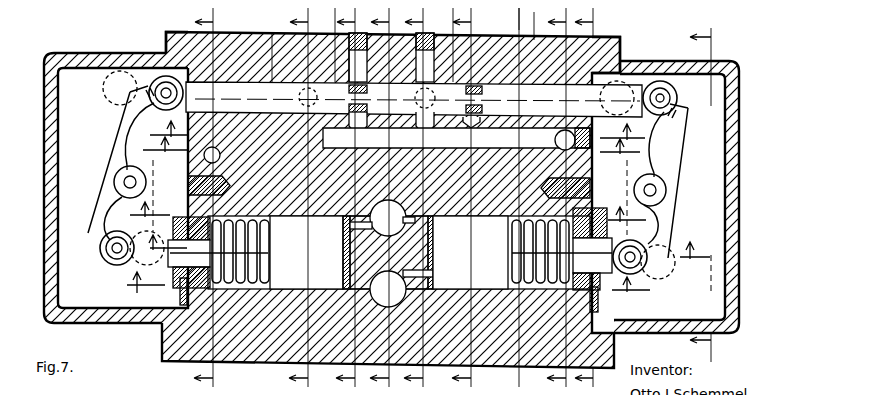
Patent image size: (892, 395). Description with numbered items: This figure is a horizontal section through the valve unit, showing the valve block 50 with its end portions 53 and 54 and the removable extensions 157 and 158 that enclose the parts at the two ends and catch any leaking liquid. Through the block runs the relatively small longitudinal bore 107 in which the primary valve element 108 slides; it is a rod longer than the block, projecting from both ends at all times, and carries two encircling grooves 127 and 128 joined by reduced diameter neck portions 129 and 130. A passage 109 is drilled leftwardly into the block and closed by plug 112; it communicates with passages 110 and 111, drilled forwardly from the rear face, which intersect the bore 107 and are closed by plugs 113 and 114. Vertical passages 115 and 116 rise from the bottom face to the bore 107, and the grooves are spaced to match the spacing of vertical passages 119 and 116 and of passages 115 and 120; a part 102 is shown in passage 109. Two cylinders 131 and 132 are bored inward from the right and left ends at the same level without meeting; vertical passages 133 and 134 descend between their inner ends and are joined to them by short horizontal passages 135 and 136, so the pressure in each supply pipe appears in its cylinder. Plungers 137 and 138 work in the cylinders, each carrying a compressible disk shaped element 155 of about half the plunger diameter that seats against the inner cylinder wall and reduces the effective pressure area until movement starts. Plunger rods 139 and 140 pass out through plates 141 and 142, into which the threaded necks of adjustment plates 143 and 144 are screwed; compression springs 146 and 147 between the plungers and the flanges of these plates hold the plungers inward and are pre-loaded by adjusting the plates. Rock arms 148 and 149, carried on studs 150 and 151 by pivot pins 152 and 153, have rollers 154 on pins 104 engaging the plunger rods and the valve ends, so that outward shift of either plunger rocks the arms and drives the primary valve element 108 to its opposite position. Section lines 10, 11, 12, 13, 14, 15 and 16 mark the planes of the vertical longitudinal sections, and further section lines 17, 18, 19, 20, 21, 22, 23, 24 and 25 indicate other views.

The section line 10— 10 is at (163, 87).
The section line 11— 11 is at (399, 128).
The section line 12— 12 is at (391, 145).
The section line 13— 13 is at (169, 177).
The section line 14— 14 is at (387, 219).
The section line 15— 15 is at (429, 247).
The section line 16— 16 is at (388, 292).
The section line 17 is at (711, 190).
The section line 18 is at (595, 197).
The section line 19 is at (567, 197).
The section line 20 is at (472, 197).
The section line 21 is at (424, 197).
The section line 22 is at (390, 197).
The section line 23 is at (356, 197).
The section line 24 is at (309, 197).
The section line 25 is at (215, 197).
The valve body 50 is at (391, 200).
The body flange 53 is at (612, 42).
The body flange 54 is at (168, 42).
The ball 102 is at (565, 150).
The pin 104 is at (220, 155).
The bore 107 is at (272, 33).
The primary valve element 108 is at (541, 26).
The passage 109 is at (519, 15).
The passage 110 is at (434, 66).
The passage 111 is at (349, 62).
The plug 112 is at (590, 138).
The plug 113 is at (459, 45).
The plug 114 is at (343, 45).
The vertical passage 115 is at (563, 181).
The vertical passage 116 is at (312, 105).
The vertical passage 119 is at (480, 125).
The vertical passage 120 is at (414, 99).
The encircling groove 127 is at (535, 72).
The encircling groove 128 is at (374, 85).
The reduced diameter neck portion 129 is at (482, 101).
The reduced diameter neck portion 130 is at (367, 100).
The cylinder 131 is at (525, 201).
The cylinder 132 is at (248, 295).
The vertical passage 133 is at (400, 296).
The vertical passage 134 is at (396, 210).
The short horizontal passage 135 is at (433, 273).
The short horizontal passage 136 is at (345, 229).
The plunger 137 is at (470, 252).
The plunger 138 is at (306, 252).
The plunger rod 139 is at (562, 255).
The plunger rod 140 is at (218, 242).
The plate 141 is at (598, 312).
The plate 142 is at (180, 300).
The adjustment plate 143 is at (599, 260).
The adjustment plate 144 is at (183, 284).
The compression spring 146 is at (512, 256).
The compression spring 147 is at (266, 262).
The rock arm 148 is at (672, 170).
The rock arm 149 is at (118, 148).
The stud 150 is at (668, 216).
The stud 151 is at (127, 164).
The pivot pin 152 is at (660, 190).
The pivot pin 153 is at (124, 183).
The roller 154 is at (137, 88).
The disk shaped element 155 is at (345, 266).
The removable extension 157 is at (738, 131).
The removable extension 158 is at (50, 103).